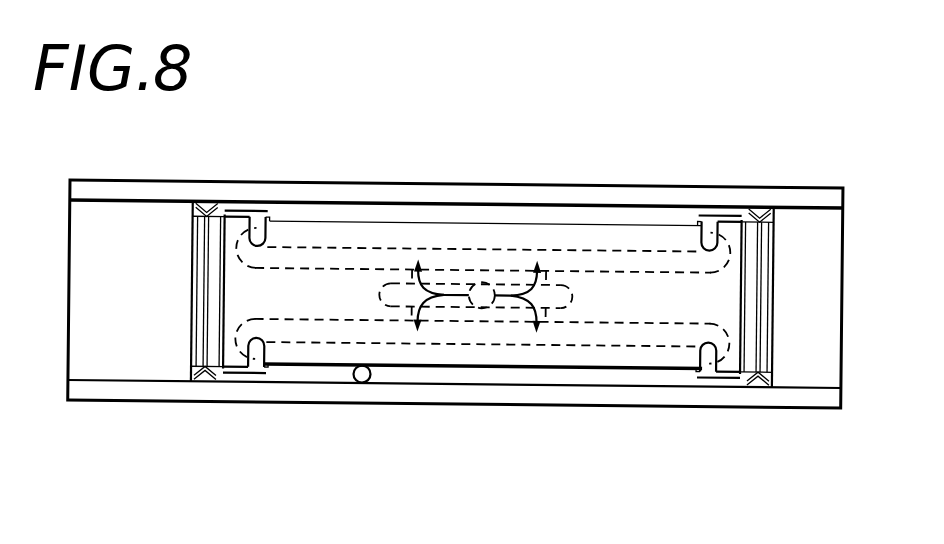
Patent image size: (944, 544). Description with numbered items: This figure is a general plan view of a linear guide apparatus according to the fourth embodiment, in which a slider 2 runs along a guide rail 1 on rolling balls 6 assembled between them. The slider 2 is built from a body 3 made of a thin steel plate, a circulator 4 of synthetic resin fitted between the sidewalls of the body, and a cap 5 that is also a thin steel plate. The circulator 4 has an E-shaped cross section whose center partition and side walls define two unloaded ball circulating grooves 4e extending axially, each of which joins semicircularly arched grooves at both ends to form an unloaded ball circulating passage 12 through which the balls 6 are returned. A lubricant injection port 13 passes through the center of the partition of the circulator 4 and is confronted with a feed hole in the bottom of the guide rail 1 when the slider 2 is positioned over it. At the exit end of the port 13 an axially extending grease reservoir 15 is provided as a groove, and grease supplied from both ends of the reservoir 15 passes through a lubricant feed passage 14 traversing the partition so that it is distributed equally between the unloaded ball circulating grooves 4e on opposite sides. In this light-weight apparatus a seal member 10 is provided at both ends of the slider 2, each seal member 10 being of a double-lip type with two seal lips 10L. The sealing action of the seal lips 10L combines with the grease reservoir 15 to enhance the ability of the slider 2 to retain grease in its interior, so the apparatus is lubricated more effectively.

The guide rail 1 is at (686, 407).
The slider 2 is at (641, 222).
The slider body 3 is at (558, 230).
The circulator 4 is at (247, 203).
The unloaded ball circulating groove 4e is at (348, 268).
The cap 5 is at (262, 212).
The balls 6 is at (362, 383).
The seal member 10 is at (197, 372).
The seal lip 10L is at (745, 207).
The unloaded ball circulating passage 12 is at (735, 268).
The lubricant injection port 13 is at (494, 308).
The lubricant feed passage 14 is at (421, 262).
The grease reservoir 15 is at (402, 312).